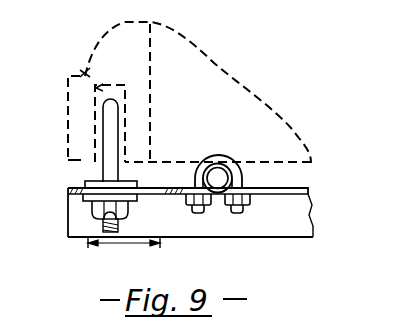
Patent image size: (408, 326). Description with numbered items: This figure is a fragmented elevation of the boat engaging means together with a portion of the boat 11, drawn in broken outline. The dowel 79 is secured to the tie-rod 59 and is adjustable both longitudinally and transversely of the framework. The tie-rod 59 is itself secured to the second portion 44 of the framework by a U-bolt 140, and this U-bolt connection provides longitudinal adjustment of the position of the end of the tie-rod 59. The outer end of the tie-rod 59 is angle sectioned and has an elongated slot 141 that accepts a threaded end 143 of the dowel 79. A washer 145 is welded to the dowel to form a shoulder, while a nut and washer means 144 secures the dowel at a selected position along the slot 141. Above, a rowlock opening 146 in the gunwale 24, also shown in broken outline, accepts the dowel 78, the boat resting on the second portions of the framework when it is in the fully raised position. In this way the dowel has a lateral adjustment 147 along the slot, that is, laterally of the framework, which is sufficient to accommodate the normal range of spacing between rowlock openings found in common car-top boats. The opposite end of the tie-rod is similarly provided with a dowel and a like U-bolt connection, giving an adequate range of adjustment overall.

The boat 11 is at (212, 63).
The gunwale 24 is at (68, 110).
The second portion 44 is at (222, 158).
The tie-rod 59 is at (246, 230).
The dowel 78 is at (66, 163).
The dowel 79 is at (102, 173).
The U-bolt 140 is at (245, 177).
The elongated slot 141 is at (140, 196).
The threaded end 143 is at (102, 228).
The nut and washer means 144 is at (98, 208).
The washer 145 is at (132, 184).
The rowlock opening 146 is at (84, 72).
The lateral adjustment 147 is at (124, 246).